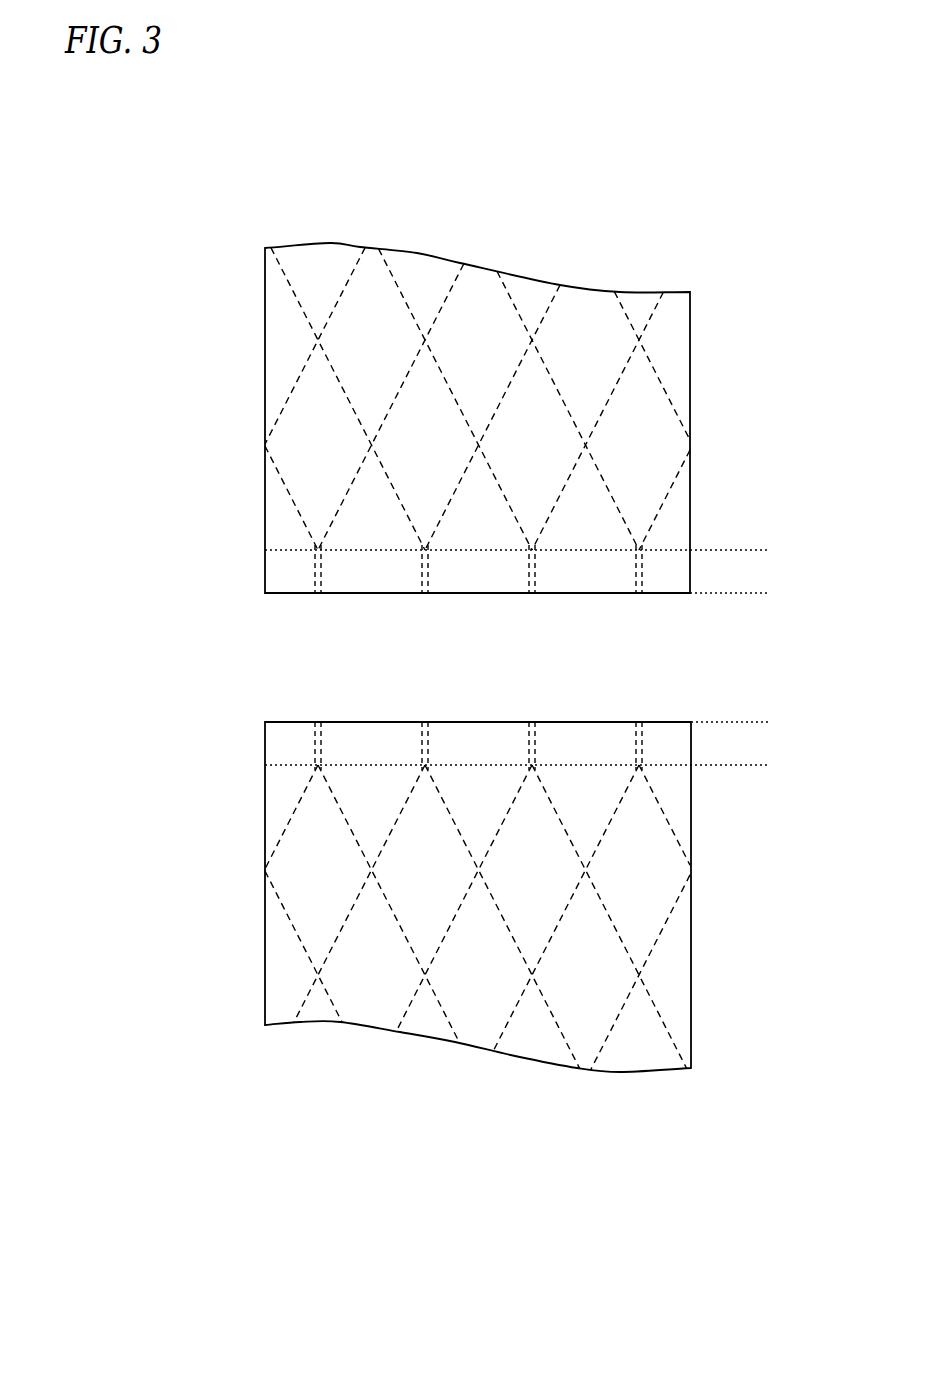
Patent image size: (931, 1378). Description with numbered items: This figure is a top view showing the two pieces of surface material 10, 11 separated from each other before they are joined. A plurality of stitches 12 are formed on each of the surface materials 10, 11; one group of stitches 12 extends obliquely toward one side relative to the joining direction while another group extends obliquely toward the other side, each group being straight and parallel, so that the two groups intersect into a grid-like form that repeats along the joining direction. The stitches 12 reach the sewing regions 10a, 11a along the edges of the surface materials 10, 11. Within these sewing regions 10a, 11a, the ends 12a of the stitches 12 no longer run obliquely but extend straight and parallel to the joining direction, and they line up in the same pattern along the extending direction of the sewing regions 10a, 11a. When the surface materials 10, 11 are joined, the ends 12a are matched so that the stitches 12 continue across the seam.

The surface material 10 is at (278, 248).
The surface material 11 is at (668, 1072).
The stitches 12 is at (440, 307).
The ends of the stitches 12a is at (316, 574).
The sewing region 10a is at (762, 551).
The sewing region 11a is at (759, 723).